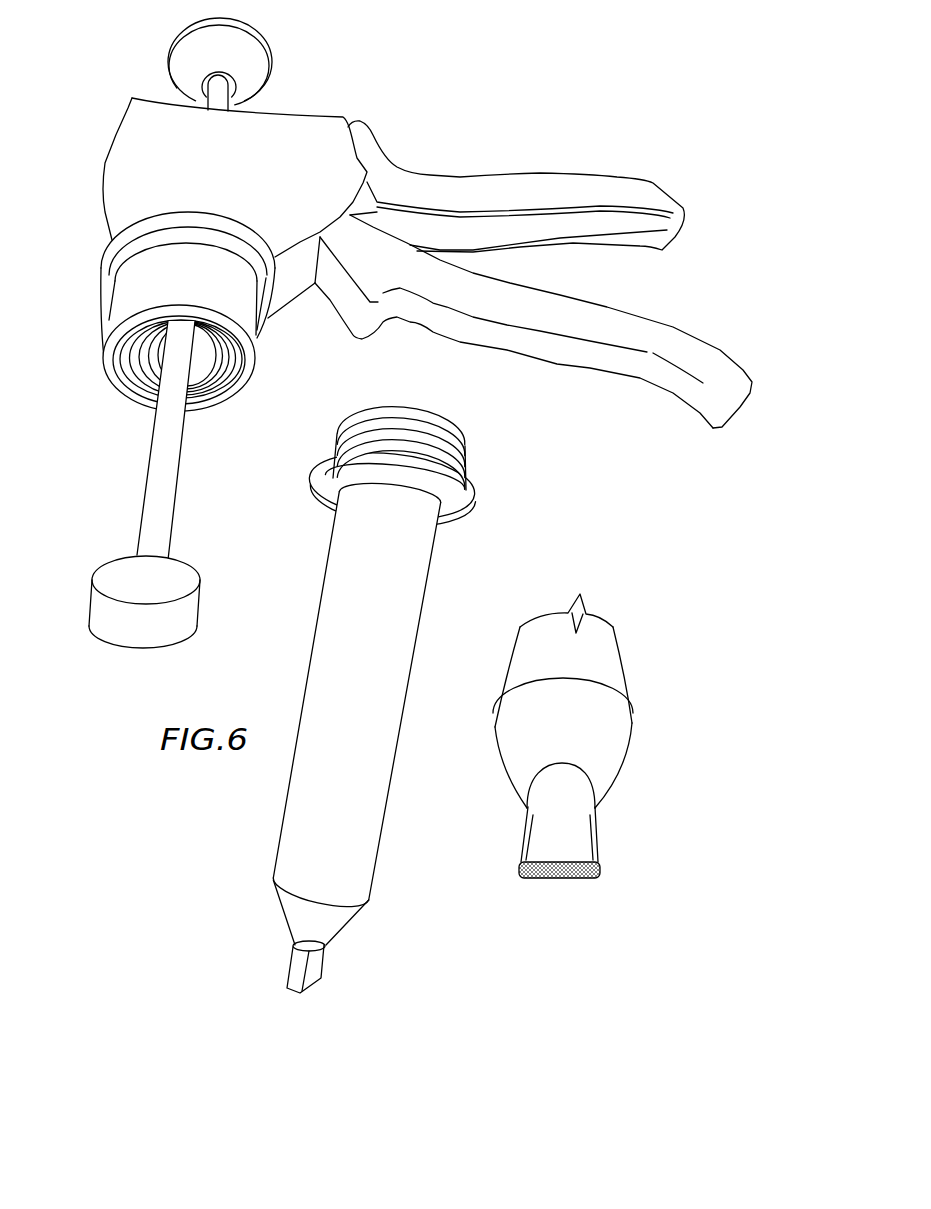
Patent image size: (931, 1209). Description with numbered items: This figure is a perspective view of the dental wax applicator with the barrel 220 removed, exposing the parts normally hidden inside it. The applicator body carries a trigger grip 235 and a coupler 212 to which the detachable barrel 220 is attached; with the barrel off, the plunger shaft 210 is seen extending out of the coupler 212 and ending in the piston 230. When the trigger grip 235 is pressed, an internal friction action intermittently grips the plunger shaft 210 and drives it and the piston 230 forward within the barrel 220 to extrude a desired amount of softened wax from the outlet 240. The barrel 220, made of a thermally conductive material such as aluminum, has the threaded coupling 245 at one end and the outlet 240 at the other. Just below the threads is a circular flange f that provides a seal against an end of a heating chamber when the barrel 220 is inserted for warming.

The plunger shaft 210 is at (272, 84).
The coupler 212 is at (253, 341).
The barrel 220 is at (448, 718).
The piston 230 is at (135, 640).
The trigger grip 235 is at (618, 397).
The outlet 240 is at (324, 962).
The threaded coupling 245 is at (343, 415).
The circular flange f is at (313, 486).